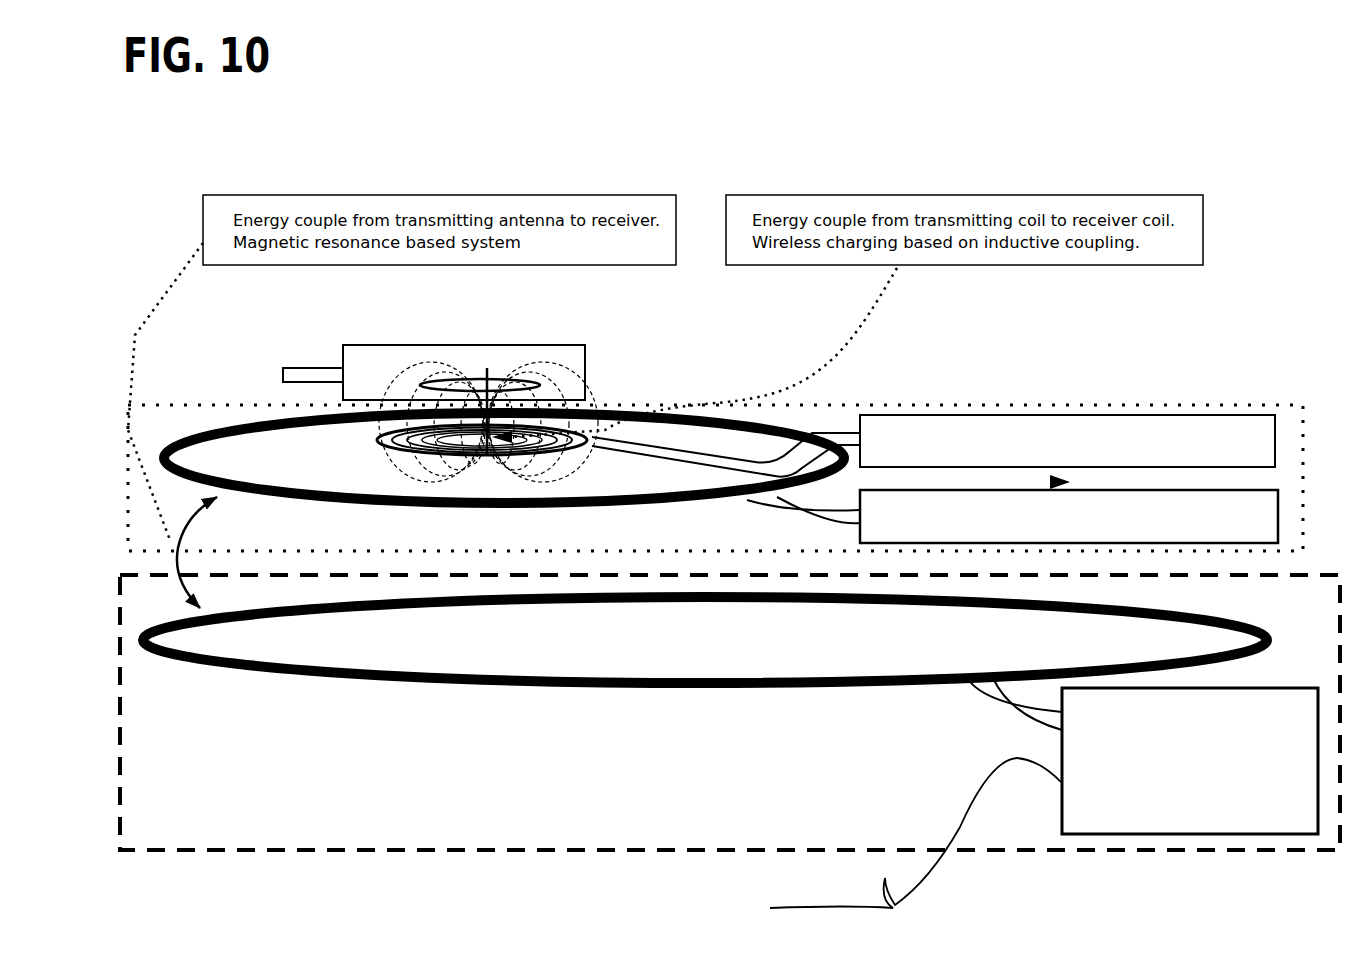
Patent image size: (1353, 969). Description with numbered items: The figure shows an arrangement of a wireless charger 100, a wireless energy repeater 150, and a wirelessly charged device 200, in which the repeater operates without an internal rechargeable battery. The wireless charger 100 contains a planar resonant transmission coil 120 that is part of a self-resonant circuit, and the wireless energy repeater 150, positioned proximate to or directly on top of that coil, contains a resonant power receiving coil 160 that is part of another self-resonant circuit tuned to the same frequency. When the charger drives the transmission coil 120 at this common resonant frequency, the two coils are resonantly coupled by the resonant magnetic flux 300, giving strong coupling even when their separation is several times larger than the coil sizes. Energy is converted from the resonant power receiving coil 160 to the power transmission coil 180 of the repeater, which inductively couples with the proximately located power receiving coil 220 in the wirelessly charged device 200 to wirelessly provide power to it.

The wireless charger 100 is at (730, 741).
The resonant transmission coil 120 is at (188, 670).
The wireless energy repeater 150 is at (715, 478).
The resonant power receiving coil 160 is at (770, 418).
The power transmission coil 180 is at (385, 448).
The wirelessly charged device 200 is at (540, 318).
The power receiving coil 220 is at (547, 376).
The resonant magnetic flux 300 is at (177, 552).